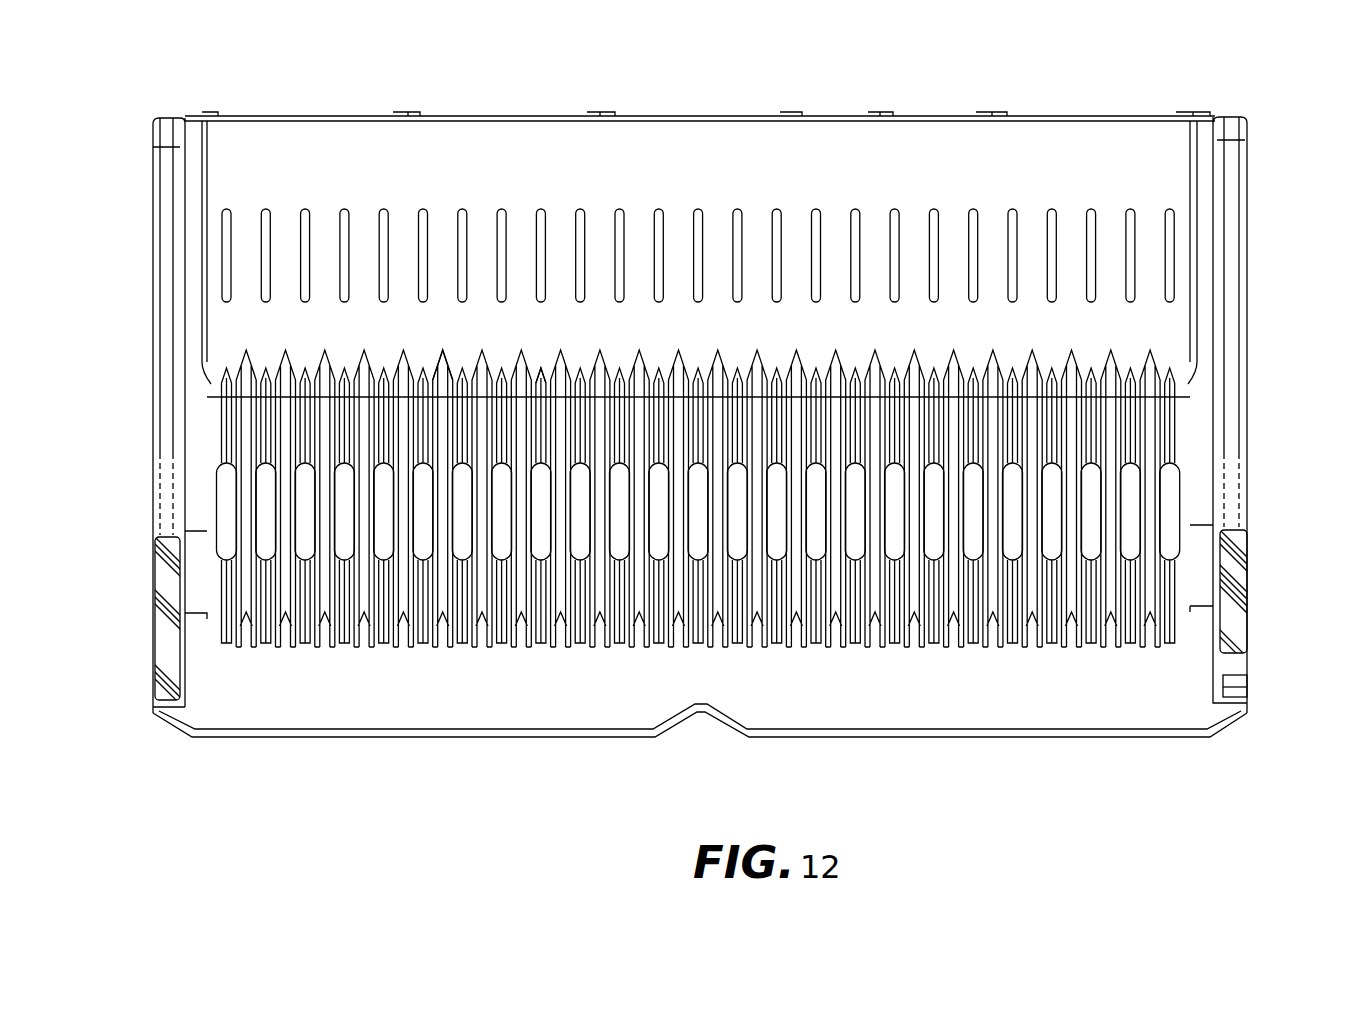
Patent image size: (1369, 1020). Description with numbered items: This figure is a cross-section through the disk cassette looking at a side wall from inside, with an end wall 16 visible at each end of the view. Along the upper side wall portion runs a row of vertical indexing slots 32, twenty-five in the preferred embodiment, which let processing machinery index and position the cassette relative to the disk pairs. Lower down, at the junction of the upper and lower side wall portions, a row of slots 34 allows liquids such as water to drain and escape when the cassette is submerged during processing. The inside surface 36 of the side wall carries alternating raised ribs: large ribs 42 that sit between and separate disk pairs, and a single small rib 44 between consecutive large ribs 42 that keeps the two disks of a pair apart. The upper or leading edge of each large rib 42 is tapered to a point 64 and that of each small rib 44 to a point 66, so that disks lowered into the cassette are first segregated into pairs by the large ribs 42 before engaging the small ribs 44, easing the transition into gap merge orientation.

The end wall 16 is at (160, 570).
The indexing slot 32 is at (1050, 208).
The slot 34 is at (1135, 505).
The inside surface 36 is at (830, 142).
The large rib 42 is at (245, 350).
The small rib 44 is at (267, 403).
The leading edge of large rib 64 is at (443, 350).
The leading edge of small rib 66 is at (541, 352).